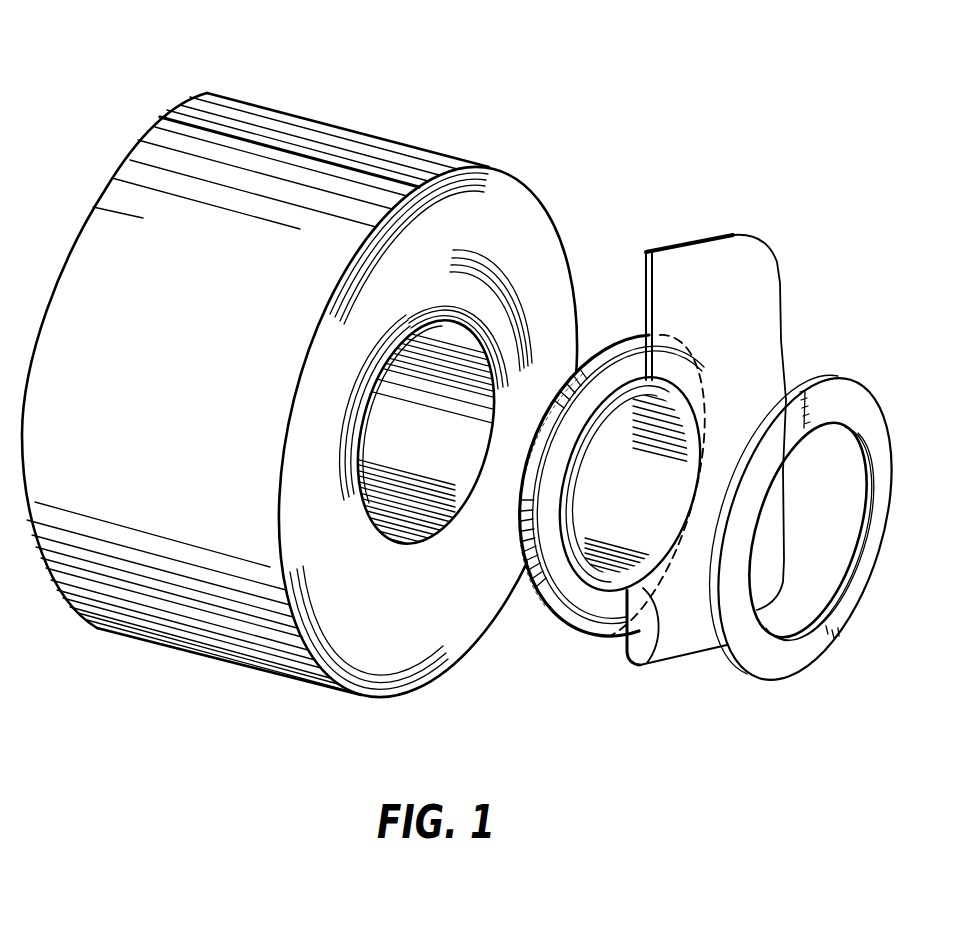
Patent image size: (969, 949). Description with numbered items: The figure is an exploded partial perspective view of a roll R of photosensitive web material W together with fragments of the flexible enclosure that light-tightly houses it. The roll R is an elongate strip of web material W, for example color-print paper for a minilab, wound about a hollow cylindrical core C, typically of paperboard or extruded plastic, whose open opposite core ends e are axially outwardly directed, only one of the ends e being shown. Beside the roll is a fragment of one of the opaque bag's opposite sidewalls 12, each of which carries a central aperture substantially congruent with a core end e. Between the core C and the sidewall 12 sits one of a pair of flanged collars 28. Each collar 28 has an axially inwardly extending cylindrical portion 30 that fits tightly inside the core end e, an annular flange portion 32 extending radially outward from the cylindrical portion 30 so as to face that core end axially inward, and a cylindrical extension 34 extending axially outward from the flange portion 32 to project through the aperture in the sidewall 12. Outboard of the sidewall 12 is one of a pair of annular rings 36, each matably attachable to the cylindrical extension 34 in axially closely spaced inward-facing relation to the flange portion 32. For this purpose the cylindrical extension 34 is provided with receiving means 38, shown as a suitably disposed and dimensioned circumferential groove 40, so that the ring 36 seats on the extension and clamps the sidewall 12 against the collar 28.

The photosensitive web material W is at (326, 148).
The roll R is at (500, 135).
The core end e is at (490, 417).
The core C is at (436, 489).
The bag sidewall 12 is at (763, 292).
The flanged collar 28 is at (687, 432).
The cylindrical portion 30 is at (578, 365).
The annular flange portion 32 is at (583, 612).
The cylindrical extension 34 is at (652, 588).
The annular ring 36 is at (783, 662).
The means for matably receiving a ring 38 is at (555, 605).
The circumferential groove 40 is at (580, 370).